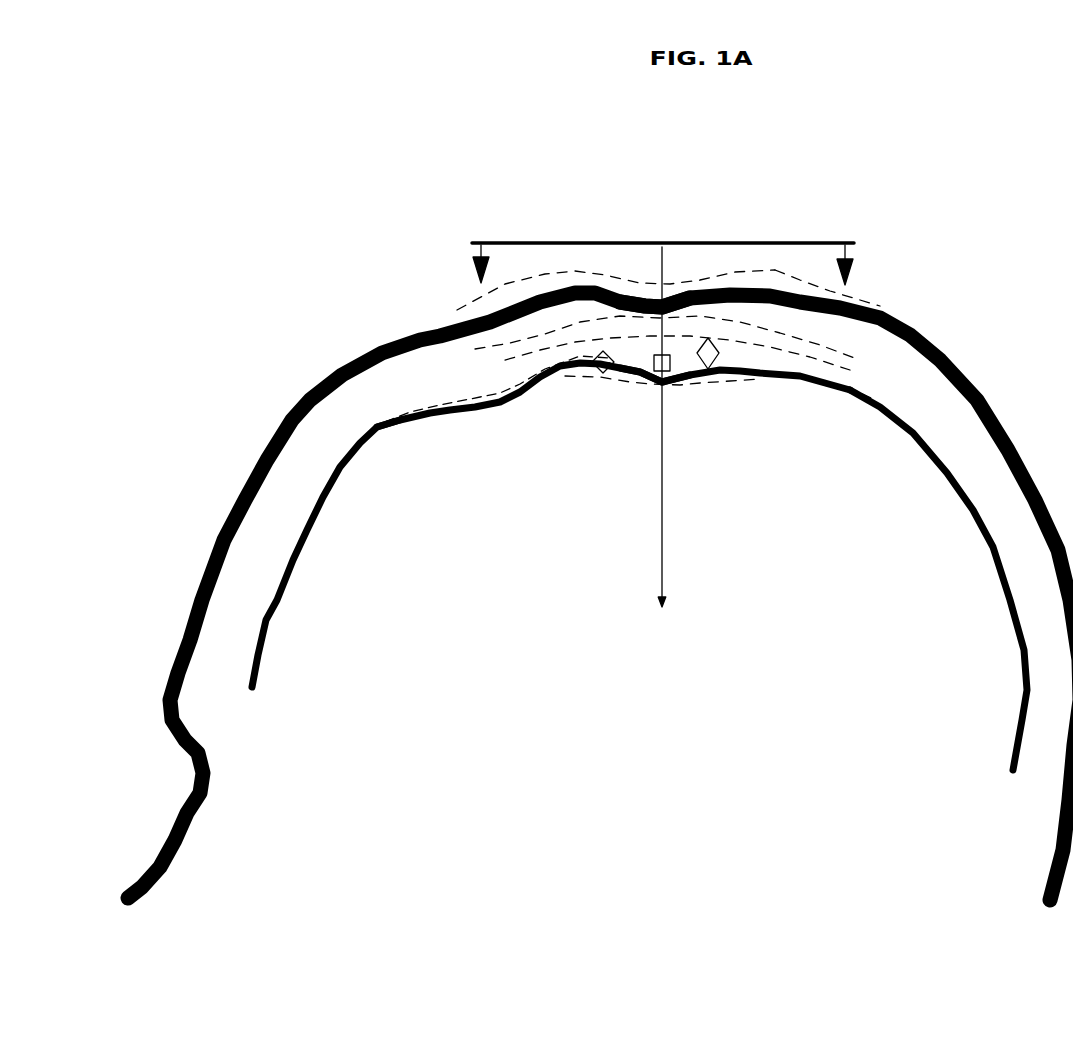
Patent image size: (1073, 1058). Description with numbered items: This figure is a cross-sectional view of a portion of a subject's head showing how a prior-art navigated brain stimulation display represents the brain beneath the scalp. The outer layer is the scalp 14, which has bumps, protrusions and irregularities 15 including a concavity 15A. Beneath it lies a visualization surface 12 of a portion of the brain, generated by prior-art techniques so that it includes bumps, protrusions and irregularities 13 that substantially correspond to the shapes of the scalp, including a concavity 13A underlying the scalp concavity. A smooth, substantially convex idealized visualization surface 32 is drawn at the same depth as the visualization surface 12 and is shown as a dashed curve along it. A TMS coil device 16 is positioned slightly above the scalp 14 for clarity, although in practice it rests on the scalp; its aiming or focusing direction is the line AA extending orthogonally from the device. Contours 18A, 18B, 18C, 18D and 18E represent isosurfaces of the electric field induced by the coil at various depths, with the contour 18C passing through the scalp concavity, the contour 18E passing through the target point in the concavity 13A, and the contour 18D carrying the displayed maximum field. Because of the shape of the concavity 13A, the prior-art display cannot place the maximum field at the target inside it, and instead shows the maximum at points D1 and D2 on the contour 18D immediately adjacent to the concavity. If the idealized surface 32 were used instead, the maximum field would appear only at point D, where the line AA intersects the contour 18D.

The visualization surface 12 is at (270, 632).
The bumps, protrusion and irregularities 13 is at (505, 410).
The concavity 13A is at (641, 356).
The scalp 14 is at (600, 596).
The bumps, protrusion and irregularities 15 is at (426, 354).
The concavity 15A is at (650, 284).
The TMS coil device 16 is at (827, 242).
The contour 18A is at (762, 270).
The contour 18B is at (787, 272).
The contour 18C is at (817, 285).
The contour 18D is at (865, 302).
The contour 18E is at (867, 330).
The idealized visualization surface 32 is at (368, 450).
The point D is at (668, 354).
The point D1 is at (603, 350).
The point D2 is at (732, 335).
The line AA is at (665, 545).